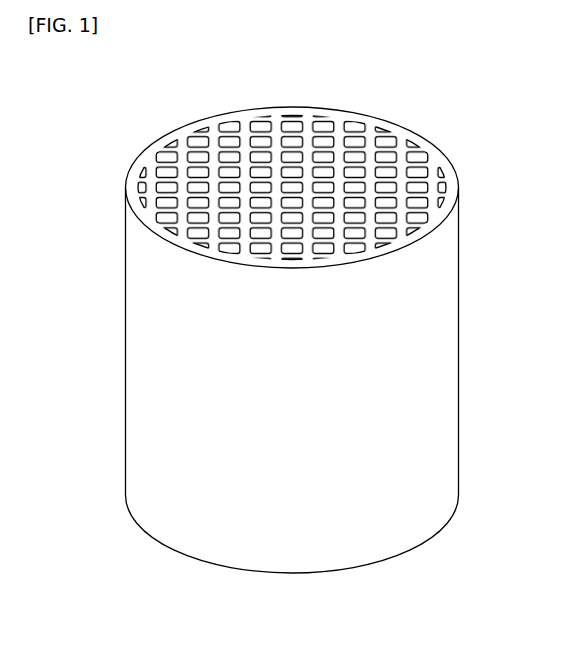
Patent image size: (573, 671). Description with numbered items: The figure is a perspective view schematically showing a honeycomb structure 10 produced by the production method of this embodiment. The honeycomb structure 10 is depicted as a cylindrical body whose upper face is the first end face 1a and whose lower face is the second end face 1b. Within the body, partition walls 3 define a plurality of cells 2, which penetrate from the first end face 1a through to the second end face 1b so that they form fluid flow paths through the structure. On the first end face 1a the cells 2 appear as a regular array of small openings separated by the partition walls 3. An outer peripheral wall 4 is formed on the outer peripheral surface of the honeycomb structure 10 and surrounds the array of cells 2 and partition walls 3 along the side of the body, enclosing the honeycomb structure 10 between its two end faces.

The first end face 1a is at (152, 133).
The second end face 1b is at (157, 559).
The cells 2 is at (324, 142).
The partition walls 3 is at (306, 133).
The outer peripheral wall 4 is at (437, 155).
The honeycomb structure 10 is at (286, 341).